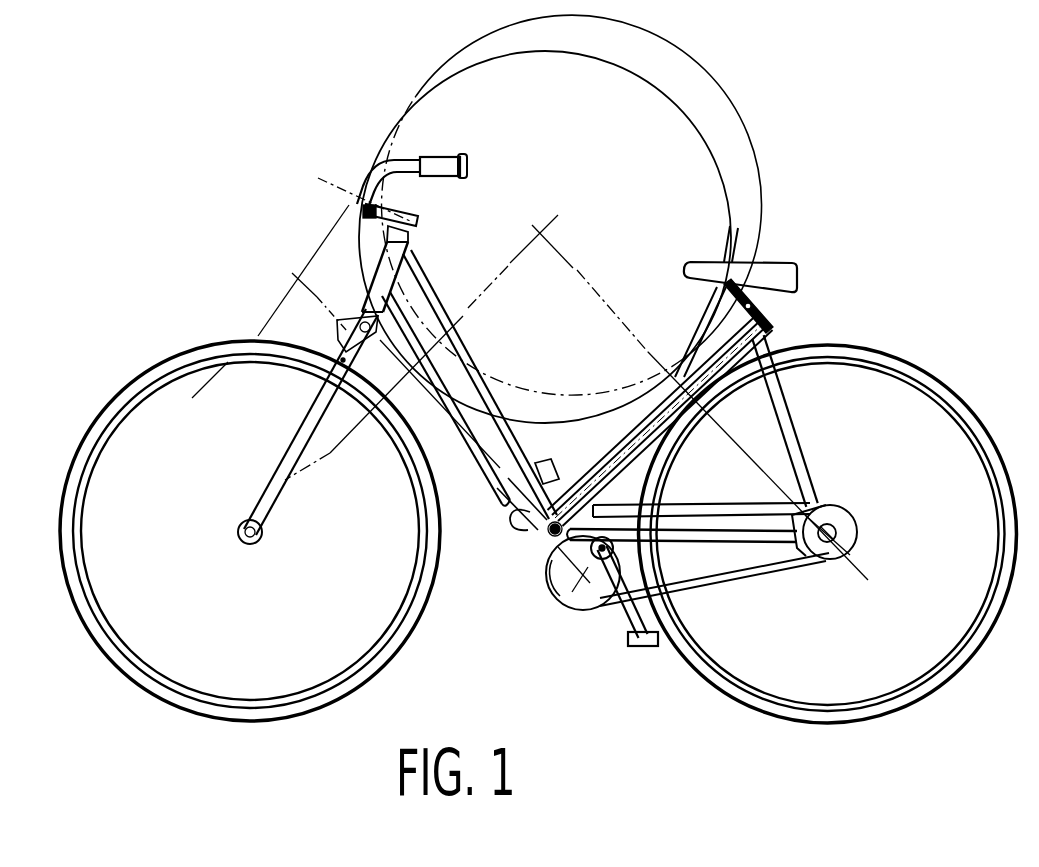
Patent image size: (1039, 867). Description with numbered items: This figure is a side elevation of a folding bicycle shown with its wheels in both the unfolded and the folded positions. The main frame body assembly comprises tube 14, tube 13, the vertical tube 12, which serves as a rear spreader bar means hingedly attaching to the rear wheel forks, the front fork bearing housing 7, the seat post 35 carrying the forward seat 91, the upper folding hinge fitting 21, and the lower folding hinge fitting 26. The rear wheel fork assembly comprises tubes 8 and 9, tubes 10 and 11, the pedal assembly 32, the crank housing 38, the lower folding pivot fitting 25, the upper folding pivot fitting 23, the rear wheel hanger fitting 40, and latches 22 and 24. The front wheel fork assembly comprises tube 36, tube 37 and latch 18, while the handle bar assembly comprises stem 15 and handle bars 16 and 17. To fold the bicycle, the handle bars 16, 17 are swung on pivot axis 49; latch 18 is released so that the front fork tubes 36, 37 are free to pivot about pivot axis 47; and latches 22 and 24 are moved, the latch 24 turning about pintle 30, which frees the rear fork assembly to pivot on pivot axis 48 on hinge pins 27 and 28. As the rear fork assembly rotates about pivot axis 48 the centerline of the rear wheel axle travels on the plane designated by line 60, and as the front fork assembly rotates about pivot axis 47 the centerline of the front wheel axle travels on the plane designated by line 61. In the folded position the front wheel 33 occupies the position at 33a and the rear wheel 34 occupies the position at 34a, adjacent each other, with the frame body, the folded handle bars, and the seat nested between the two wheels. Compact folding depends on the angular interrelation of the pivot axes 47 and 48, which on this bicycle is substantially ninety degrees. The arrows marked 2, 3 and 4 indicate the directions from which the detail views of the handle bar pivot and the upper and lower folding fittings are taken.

The section line 2- 2 is at (390, 97).
The section line 3- 3 is at (695, 236).
The section line 4- 4 is at (500, 437).
The front fork bearing housing 7 is at (391, 279).
The rear wheel fork tube 8 is at (820, 421).
The rear wheel fork tube 9 is at (812, 488).
The rear wheel fork tube 10 is at (688, 539).
The rear wheel fork tube 11 is at (710, 552).
The vertical tube 12 is at (628, 455).
The tube 13 is at (398, 320).
The tube 14 is at (469, 340).
The stem 15 is at (410, 220).
The handle bar 16 is at (433, 161).
The handle bar 17 is at (402, 163).
The latch 18 is at (400, 377).
The upper folding hinge fitting 21 is at (776, 328).
The latch 22 is at (774, 318).
The upper folding pivot fitting 23 is at (790, 336).
The latch 24 is at (510, 486).
The lower folding pivot fitting 25 is at (536, 482).
The lower folding hinge fitting 26 is at (508, 525).
The hinge pin 27 is at (536, 532).
The hinge pin 28 is at (778, 305).
The pintle 30 is at (504, 490).
The pedal assembly 32 is at (632, 626).
The front wheel 33 is at (394, 646).
The rear wheel 34 is at (950, 678).
The front wheel folded position 33a is at (677, 393).
The rear wheel folded position 34a is at (717, 337).
The seat post 35 is at (724, 312).
The front fork tube 36 is at (299, 426).
The front fork tube 37 is at (312, 431).
The crank housing 38 is at (558, 574).
The rear wheel hanger fitting 40 is at (848, 522).
The pivot axis 47 is at (346, 328).
The pivot axis 48 is at (806, 282).
The pivot axis 49 is at (334, 186).
The line 60 is at (596, 292).
The line 61 is at (509, 268).
The forward seat 91 is at (774, 270).